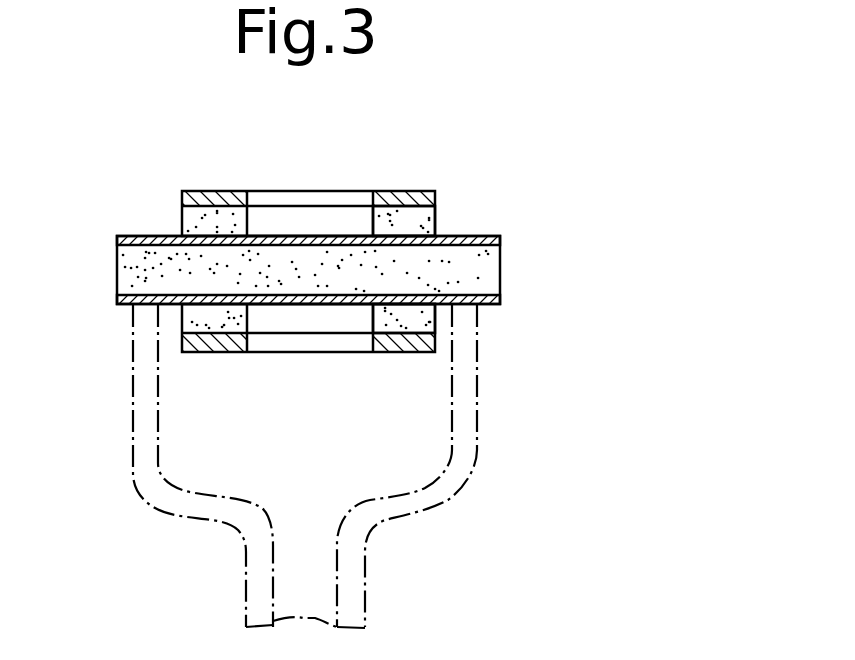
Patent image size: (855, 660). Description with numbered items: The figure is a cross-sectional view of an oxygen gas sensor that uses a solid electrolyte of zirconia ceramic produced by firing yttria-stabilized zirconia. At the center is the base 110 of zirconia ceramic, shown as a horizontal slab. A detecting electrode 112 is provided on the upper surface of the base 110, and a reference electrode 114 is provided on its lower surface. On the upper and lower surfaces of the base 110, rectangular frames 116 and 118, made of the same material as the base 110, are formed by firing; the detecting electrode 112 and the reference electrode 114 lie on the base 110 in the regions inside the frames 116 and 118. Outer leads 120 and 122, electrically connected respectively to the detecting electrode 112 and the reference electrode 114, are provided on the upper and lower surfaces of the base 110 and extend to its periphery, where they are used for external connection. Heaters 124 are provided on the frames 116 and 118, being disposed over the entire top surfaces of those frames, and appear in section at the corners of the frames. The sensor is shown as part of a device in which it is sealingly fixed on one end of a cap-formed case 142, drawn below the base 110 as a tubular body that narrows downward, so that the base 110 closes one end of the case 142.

The base 110 is at (488, 273).
The detecting electrode 112 is at (313, 200).
The reference electrode 114 is at (320, 310).
The rectangular frame 116 is at (435, 220).
The rectangular frame 118 is at (407, 325).
The outer lead 120 is at (143, 235).
The outer lead 122 is at (148, 306).
The heaters 124 is at (202, 191).
The cap-formed case 142 is at (365, 560).